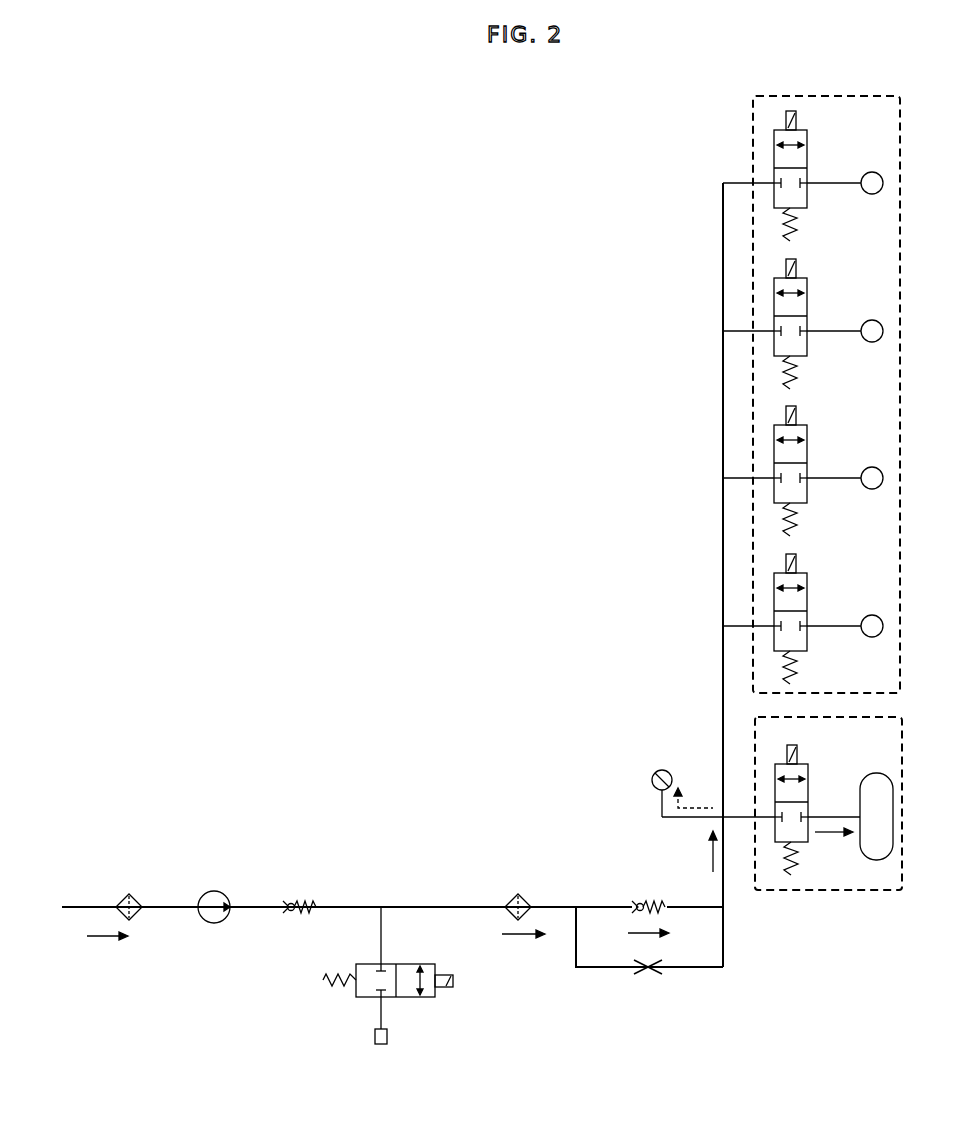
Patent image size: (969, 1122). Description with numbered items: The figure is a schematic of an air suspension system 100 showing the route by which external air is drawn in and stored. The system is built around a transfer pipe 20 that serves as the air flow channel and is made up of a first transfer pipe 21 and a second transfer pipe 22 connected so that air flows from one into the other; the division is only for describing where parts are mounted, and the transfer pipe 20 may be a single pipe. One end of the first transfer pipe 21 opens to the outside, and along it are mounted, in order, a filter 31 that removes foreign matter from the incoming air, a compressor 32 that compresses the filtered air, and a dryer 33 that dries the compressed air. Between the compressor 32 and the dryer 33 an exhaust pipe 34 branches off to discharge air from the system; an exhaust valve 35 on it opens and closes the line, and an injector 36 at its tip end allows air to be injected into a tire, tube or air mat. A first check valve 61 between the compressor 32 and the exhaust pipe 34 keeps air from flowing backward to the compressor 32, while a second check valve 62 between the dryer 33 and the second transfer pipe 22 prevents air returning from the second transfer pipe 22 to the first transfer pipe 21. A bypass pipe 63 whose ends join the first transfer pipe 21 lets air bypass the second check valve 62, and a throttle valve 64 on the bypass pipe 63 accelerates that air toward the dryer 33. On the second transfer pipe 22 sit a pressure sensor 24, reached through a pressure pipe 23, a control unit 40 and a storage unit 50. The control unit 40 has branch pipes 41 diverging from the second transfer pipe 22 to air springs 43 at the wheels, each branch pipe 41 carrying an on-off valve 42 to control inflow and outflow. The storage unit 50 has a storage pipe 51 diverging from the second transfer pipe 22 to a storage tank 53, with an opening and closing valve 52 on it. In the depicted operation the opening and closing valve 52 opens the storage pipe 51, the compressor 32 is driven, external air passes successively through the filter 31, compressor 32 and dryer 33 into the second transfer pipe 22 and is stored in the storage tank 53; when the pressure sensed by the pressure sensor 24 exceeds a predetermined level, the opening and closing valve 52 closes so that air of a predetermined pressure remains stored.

The air suspension system 100 is at (345, 437).
The transfer pipe 20 is at (474, 592).
The first transfer pipe 21 is at (455, 905).
The second transfer pipe 22 is at (723, 560).
The pressure pipe 23 is at (683, 820).
The pressure sensor 24 is at (652, 779).
The filter 31 is at (131, 895).
The compressor 32 is at (220, 891).
The dryer 33 is at (524, 893).
The exhaust pipe 34 is at (384, 935).
The exhaust valve 35 is at (455, 982).
The injector 36 is at (390, 1036).
The control unit 40 is at (754, 128).
The branch pipes 41 is at (723, 646).
The on-off valves 42 is at (793, 555).
The air springs 43 is at (872, 637).
The storage unit 50 is at (755, 737).
The storage pipe 51 is at (745, 819).
The opening and closing valve 52 is at (792, 745).
The storage tank 53 is at (877, 861).
The first check valve 61 is at (289, 900).
The second check valve 62 is at (640, 897).
The bypass pipe 63 is at (704, 969).
The throttle valve 64 is at (650, 978).